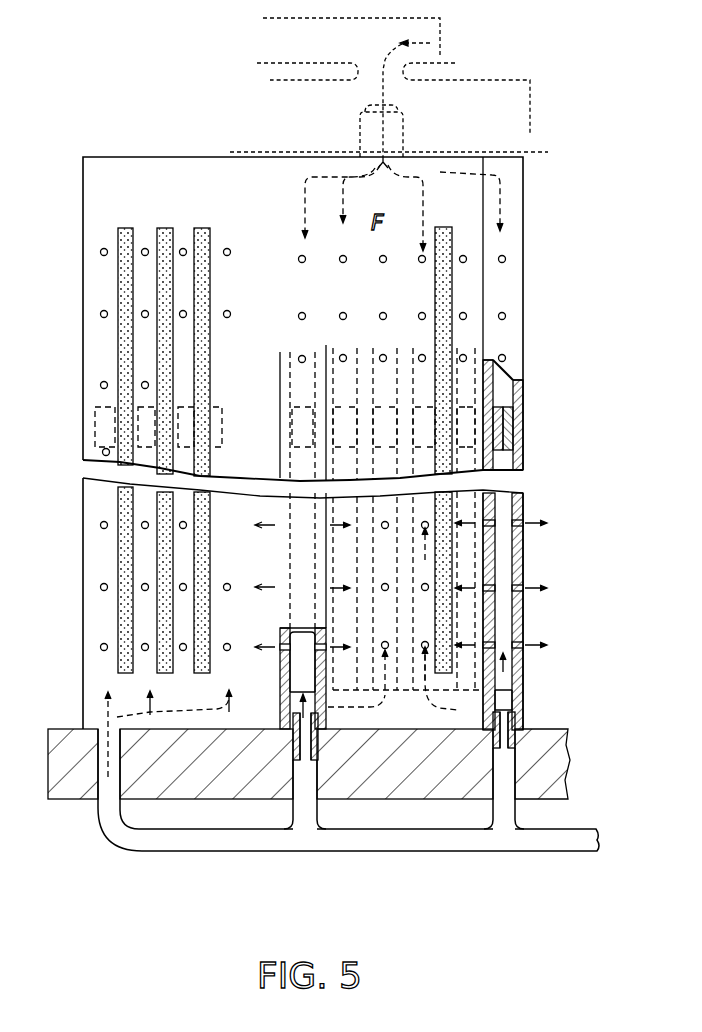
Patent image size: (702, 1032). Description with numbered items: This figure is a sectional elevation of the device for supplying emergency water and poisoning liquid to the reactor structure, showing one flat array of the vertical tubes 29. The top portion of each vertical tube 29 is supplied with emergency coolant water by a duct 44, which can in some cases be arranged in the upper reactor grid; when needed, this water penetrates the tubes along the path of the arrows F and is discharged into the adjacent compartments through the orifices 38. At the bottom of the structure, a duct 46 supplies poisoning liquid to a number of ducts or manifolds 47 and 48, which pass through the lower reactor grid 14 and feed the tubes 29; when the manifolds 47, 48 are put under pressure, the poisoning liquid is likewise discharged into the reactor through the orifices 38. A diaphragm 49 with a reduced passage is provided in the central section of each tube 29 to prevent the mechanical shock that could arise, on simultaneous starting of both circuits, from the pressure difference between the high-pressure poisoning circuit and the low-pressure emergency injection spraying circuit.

The duct 44 is at (446, 55).
The orifices 38 is at (343, 316).
The vertical tubes 29 is at (500, 392).
The diaphragm 49 is at (505, 450).
The duct or manifold 47 is at (282, 690).
The duct or manifold 48 is at (513, 700).
The lower reactor grid 14 is at (545, 775).
The duct 46 is at (565, 838).